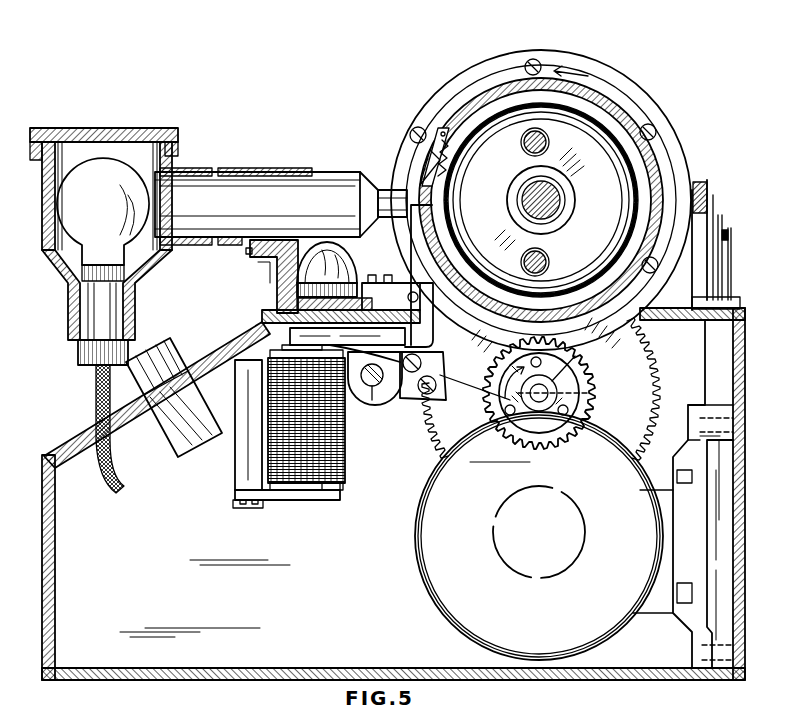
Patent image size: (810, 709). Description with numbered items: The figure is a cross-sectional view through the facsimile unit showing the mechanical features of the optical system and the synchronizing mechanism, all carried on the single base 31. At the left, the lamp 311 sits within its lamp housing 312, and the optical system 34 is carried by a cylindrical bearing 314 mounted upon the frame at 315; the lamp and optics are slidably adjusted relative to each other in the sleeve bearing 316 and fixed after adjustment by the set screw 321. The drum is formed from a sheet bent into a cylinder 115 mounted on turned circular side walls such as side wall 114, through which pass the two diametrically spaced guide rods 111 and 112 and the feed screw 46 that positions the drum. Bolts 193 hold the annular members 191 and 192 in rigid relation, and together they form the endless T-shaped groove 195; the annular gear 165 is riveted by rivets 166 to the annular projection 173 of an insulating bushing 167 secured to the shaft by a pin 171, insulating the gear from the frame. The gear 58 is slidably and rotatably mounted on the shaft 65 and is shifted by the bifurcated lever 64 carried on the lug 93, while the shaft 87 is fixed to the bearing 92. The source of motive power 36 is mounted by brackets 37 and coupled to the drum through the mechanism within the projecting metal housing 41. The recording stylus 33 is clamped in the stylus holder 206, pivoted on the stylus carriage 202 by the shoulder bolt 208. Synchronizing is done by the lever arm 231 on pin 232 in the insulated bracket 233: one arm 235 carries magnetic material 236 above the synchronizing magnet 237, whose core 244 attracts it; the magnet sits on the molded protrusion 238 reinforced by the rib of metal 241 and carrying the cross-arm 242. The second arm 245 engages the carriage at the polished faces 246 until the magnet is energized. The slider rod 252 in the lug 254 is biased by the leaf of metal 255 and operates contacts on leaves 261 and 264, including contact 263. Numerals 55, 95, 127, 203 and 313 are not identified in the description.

The base 31 is at (280, 324).
The recording stylus 33 is at (462, 136).
The optical system 34 is at (330, 172).
The source of motive power 36 is at (414, 504).
The brackets 37 is at (680, 550).
The projecting metal housing 41 is at (628, 66).
The feed screw 46 is at (556, 196).
The lead wire 55 is at (258, 268).
The gear 58 is at (622, 344).
The bifurcated lever 64 is at (455, 393).
The shaft 65 is at (548, 386).
The shaft 87 is at (374, 388).
The bearing 92 is at (375, 386).
The lug 93 is at (437, 380).
The screw 95 is at (410, 373).
The guide rod 111 is at (549, 140).
The guide rod 112 is at (549, 259).
The circular side wall 114 is at (544, 199).
The cylinder 115 is at (624, 163).
The shaft end 127 is at (560, 205).
The gear 165 is at (575, 392).
The rivets 166 is at (520, 412).
The insulating bushing 167 is at (512, 398).
The pin 171 is at (573, 393).
The annular projection 173 is at (572, 401).
The annular member 191 is at (486, 90).
The annular member 192 is at (505, 70).
The bolts 193 is at (538, 60).
The T-shaped groove 195 is at (456, 92).
The stylus carriage 202 is at (432, 110).
The arm 203 is at (413, 125).
The stylus holder 206 is at (420, 170).
The shoulder bolt 208 is at (430, 150).
The lever arm 231 is at (425, 343).
The pin 232 is at (407, 297).
The bracket 233 is at (352, 280).
The arm 235 is at (420, 340).
The magnetic material 236 is at (258, 328).
The synchronizing magnet 237 is at (346, 445).
The protrusion 238 is at (250, 470).
The rib of metal 241 is at (236, 440).
The cross-arm 242 is at (288, 500).
The core 244 is at (452, 145).
The second arm 245 is at (413, 225).
The faces 246 is at (416, 207).
The slider rod 252 is at (712, 190).
The lug 254 is at (705, 186).
The leaf of metal 255 is at (716, 196).
The leaf 261 is at (722, 222).
The contact 263 is at (731, 238).
The leaf 264 is at (728, 232).
The lamp 311 is at (106, 206).
The lamp housing 312 is at (50, 268).
The lens tube 313 is at (272, 203).
The cylindrical bearing 314 is at (288, 158).
The mounting 315 is at (276, 289).
The sleeve bearing 316 is at (196, 246).
The set screw 321 is at (252, 258).